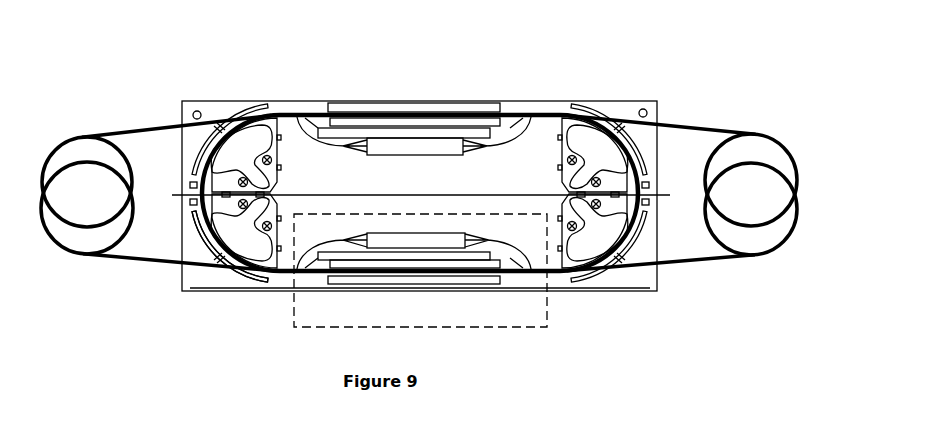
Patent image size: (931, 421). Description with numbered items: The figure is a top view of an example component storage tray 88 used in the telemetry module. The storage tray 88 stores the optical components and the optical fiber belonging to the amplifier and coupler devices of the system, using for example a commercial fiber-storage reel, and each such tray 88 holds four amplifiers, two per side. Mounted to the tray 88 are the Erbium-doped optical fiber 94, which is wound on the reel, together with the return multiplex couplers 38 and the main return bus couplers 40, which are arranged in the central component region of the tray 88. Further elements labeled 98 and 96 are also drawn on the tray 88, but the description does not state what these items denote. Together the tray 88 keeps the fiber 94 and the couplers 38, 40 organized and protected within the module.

The storage tray 88 is at (292, 101).
The Erbium-doped optical fiber 94 is at (237, 270).
The base plate 98 is at (327, 284).
The return multiplex couplers 38 is at (383, 283).
The main return bus couplers 40 is at (433, 254).
The housing block 96 is at (459, 247).